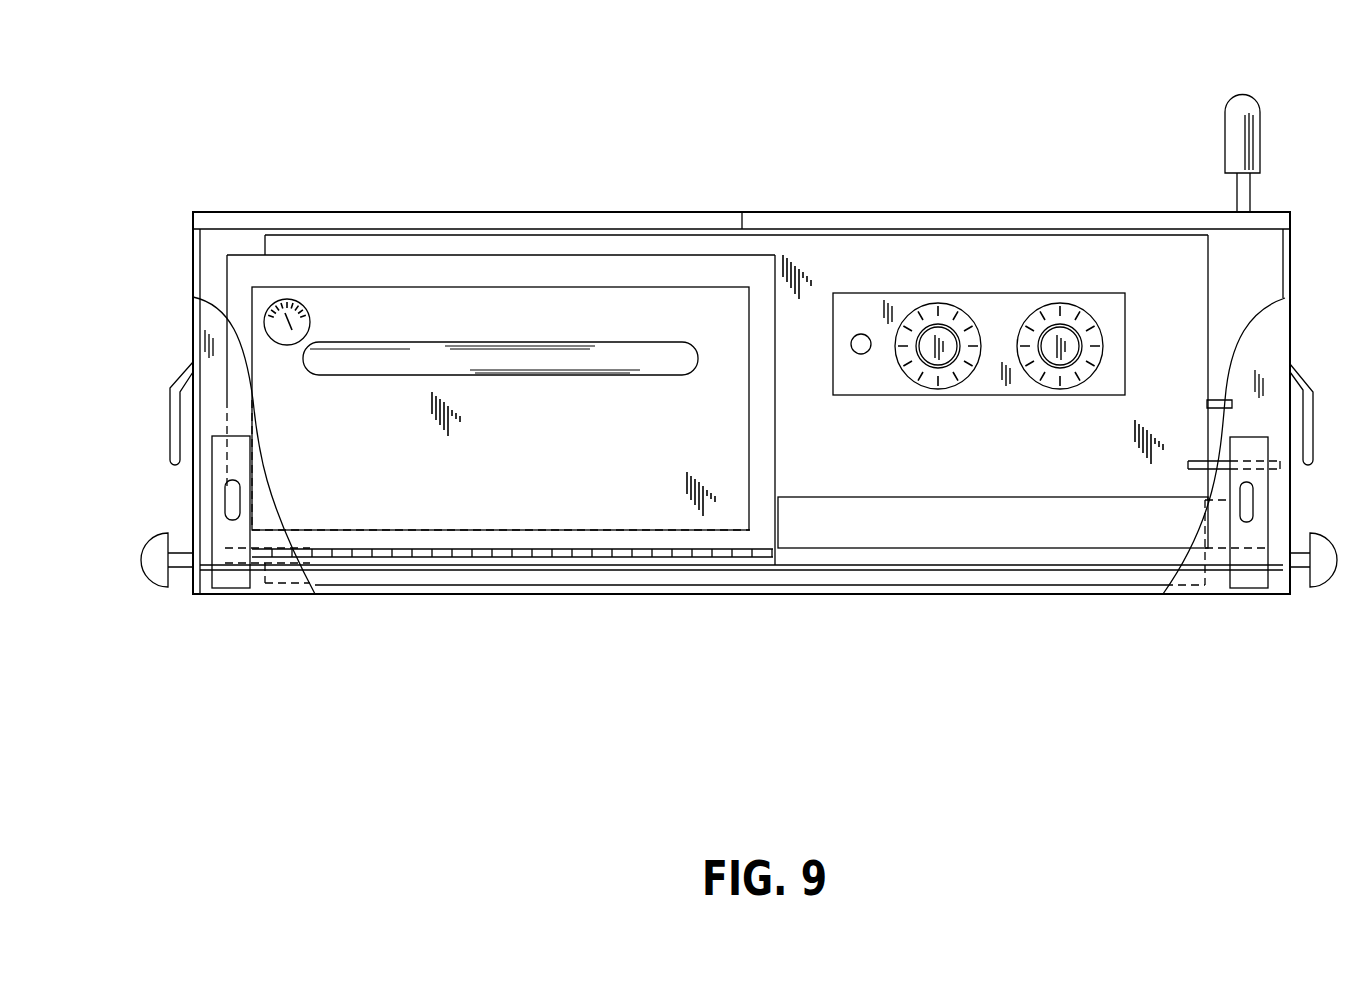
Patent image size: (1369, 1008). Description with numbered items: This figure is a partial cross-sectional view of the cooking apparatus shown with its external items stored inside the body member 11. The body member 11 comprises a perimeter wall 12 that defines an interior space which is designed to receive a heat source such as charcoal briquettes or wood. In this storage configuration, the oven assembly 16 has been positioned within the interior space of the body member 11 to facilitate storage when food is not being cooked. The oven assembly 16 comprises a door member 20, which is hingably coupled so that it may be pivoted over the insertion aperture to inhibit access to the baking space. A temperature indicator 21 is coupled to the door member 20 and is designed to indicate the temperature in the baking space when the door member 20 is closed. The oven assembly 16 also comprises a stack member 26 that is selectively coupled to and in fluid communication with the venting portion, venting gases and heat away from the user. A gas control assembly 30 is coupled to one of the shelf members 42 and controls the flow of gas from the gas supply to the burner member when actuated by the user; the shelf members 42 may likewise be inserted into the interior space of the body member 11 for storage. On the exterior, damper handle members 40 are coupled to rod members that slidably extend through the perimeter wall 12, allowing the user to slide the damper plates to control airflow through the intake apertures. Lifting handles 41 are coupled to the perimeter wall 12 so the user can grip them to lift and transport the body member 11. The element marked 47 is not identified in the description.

The body member 11 is at (1290, 262).
The perimeter wall 12 is at (1290, 262).
The oven assembly 16 is at (805, 463).
The door member 20 is at (507, 305).
The temperature indicator 21 is at (300, 298).
The stack member 26 is at (1015, 532).
The gas control assembly 30 is at (1052, 268).
The damper handle member 40 is at (155, 570).
The lifting handle 41 is at (175, 432).
The shelf member 42 is at (825, 265).
The top strip 47 is at (900, 223).